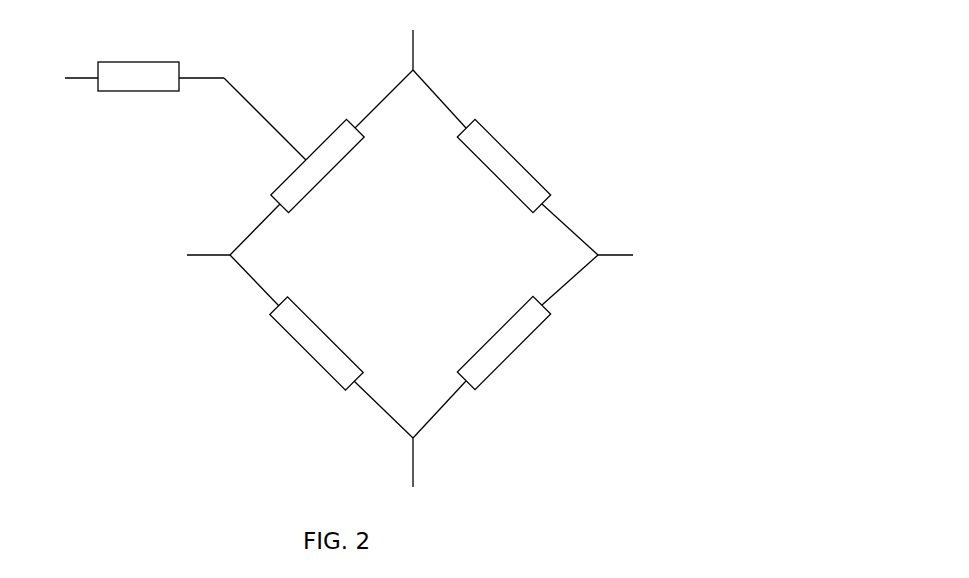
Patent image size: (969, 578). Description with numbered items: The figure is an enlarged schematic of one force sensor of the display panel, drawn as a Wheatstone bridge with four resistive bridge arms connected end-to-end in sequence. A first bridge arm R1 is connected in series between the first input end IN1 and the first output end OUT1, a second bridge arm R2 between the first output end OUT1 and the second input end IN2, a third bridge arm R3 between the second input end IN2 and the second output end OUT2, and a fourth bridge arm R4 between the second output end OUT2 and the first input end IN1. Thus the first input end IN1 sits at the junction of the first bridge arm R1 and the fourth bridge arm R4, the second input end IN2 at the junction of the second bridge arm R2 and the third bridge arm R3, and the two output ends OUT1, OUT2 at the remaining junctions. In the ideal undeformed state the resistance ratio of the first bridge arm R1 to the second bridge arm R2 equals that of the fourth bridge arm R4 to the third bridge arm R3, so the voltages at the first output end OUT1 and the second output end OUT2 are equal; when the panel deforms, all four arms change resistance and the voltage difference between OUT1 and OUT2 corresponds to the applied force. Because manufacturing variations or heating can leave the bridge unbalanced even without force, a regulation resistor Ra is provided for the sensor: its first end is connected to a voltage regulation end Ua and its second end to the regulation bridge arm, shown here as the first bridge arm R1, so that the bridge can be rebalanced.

The voltage regulation end Ua is at (65, 62).
The regulation resistor Ra is at (202, 92).
The first bridge arm R1 is at (321, 162).
The second bridge arm R2 is at (505, 162).
The third bridge arm R3 is at (505, 346).
The fourth bridge arm R4 is at (321, 346).
The first input end IN1 is at (208, 241).
The second input end IN2 is at (616, 243).
The first output end OUT1 is at (445, 50).
The second output end OUT2 is at (443, 462).